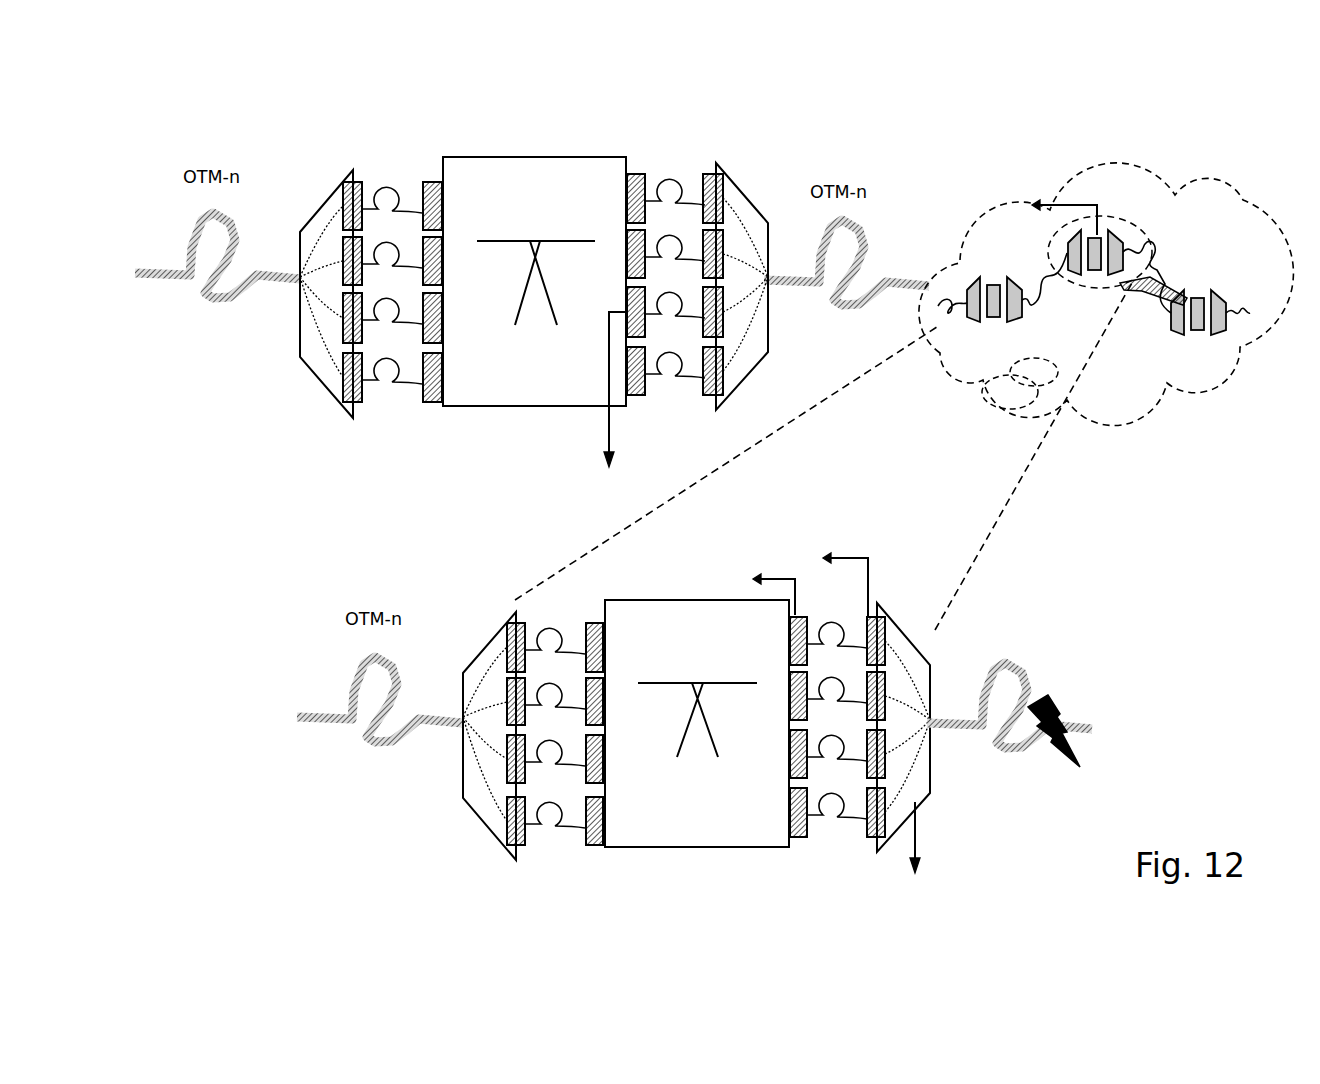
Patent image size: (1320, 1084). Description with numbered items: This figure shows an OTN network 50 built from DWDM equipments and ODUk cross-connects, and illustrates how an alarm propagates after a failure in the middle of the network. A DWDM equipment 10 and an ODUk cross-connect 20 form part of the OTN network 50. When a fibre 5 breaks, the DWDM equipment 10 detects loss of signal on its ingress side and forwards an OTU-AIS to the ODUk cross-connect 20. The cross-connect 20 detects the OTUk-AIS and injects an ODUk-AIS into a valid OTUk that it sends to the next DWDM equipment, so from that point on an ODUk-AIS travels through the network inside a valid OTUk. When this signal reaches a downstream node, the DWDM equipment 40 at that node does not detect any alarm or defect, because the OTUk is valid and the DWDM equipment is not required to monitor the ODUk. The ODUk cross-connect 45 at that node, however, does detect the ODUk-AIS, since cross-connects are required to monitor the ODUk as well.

The ODUk cross-connect 45 is at (537, 157).
The DWDM equipment 40 is at (747, 197).
The OTN network 50 is at (1242, 198).
The cross-connect 20 is at (625, 600).
The DWDM equipment 10 is at (902, 628).
The fibre 5 is at (1032, 675).